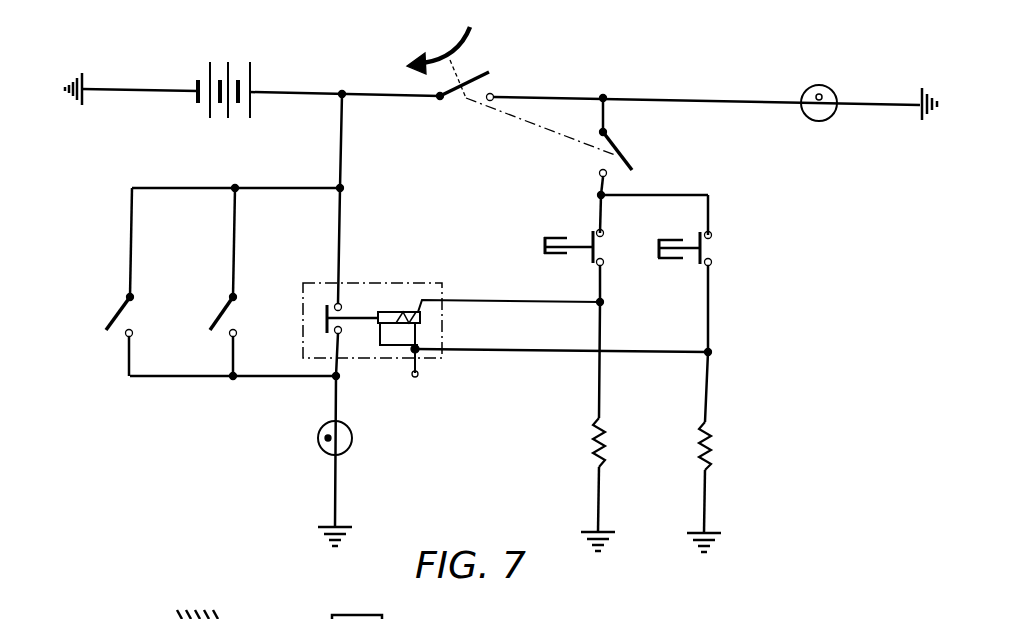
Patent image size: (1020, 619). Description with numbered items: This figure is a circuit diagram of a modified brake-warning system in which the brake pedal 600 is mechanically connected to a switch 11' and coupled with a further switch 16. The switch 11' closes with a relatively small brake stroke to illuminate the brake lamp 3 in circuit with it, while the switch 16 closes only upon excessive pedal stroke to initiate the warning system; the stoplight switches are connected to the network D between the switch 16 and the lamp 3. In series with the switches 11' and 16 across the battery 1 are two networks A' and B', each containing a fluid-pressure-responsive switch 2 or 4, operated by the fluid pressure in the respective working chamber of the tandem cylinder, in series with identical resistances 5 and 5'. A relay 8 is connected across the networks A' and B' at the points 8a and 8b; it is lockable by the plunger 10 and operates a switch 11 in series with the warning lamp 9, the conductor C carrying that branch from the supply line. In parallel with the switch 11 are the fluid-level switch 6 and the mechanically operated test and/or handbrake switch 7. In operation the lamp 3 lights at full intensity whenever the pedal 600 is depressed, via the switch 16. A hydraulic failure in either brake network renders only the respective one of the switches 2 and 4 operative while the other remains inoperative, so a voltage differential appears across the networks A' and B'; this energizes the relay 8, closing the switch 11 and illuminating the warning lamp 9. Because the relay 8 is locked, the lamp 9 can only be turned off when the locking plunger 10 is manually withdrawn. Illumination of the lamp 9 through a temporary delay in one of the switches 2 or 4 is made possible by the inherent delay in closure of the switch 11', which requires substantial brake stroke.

The battery 1 is at (248, 60).
The brake pedal 600 is at (452, 40).
The switch 16 is at (480, 86).
The network D is at (630, 100).
The brake lamp 3 is at (826, 120).
The conductor C is at (341, 222).
The test and/or handbrake switch 7 is at (122, 323).
The fluid-level switch 6 is at (230, 325).
The relay 8 is at (400, 280).
The switch 11 is at (353, 312).
The locking plunger 10 is at (419, 370).
The warning lamp 9 is at (324, 423).
The switch 11' is at (598, 145).
The fluid-pressure-responsive switch 2 is at (596, 226).
The fluid-pressure-responsive switch 4 is at (713, 249).
The point 8a is at (618, 296).
The point 8b is at (712, 355).
The network A' is at (622, 342).
The network B' is at (726, 344).
The resistance 5' is at (579, 484).
The resistance 5 is at (717, 487).